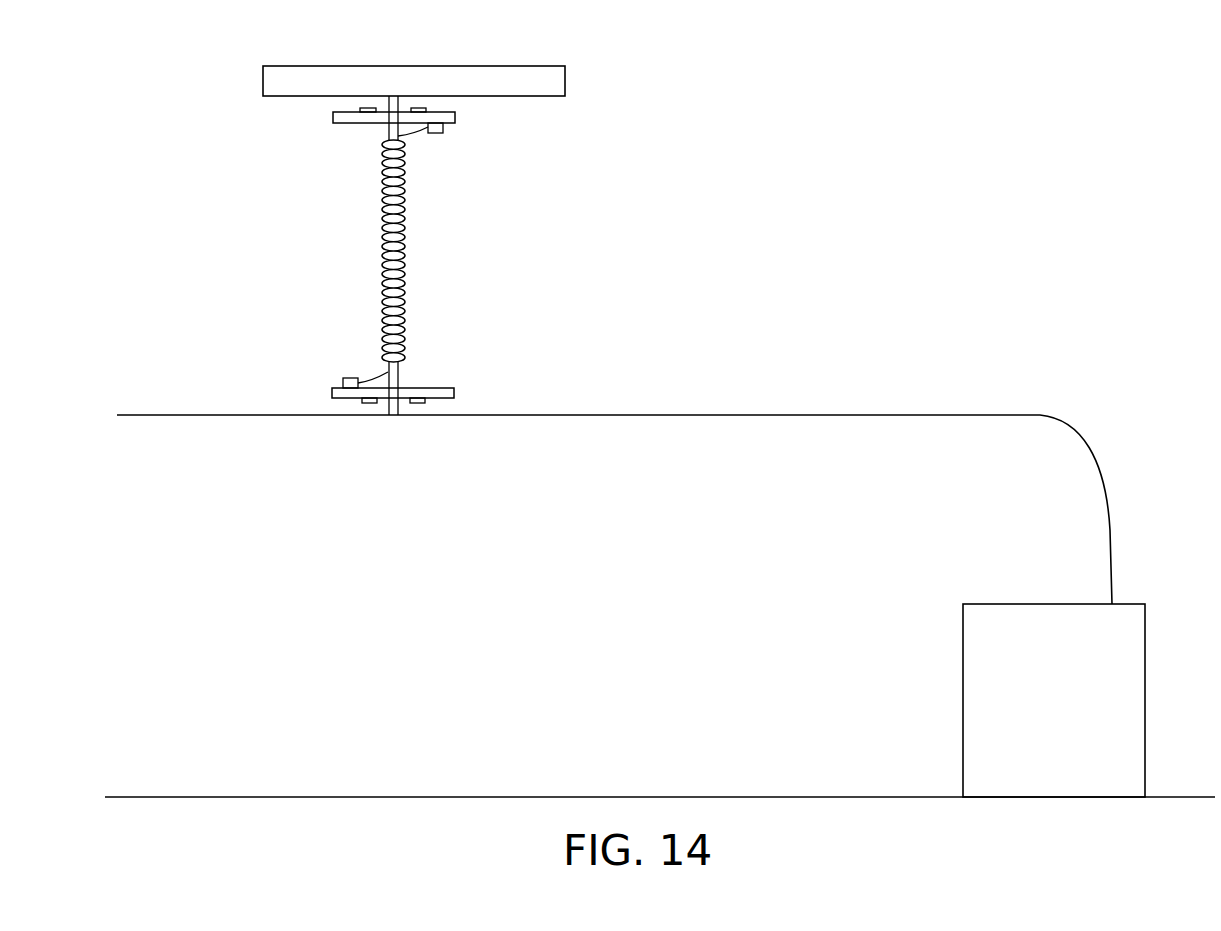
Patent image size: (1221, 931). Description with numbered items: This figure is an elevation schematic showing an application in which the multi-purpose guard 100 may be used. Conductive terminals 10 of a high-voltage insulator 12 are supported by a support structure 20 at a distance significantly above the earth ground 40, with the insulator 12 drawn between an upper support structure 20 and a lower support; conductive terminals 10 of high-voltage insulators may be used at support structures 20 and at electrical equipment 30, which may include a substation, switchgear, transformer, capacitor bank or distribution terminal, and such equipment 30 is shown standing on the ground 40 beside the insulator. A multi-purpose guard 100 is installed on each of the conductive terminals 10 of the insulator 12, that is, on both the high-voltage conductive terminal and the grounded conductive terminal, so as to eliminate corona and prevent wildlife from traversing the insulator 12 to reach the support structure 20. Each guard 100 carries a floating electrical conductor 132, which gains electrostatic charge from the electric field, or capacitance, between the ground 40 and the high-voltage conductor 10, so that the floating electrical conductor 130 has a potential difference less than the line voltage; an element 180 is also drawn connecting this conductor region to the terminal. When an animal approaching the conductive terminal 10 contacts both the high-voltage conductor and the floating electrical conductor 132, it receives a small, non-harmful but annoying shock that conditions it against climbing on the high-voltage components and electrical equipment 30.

The conductive terminal 10 is at (399, 102).
The high-voltage insulator 12 is at (403, 278).
The support structure 20 is at (565, 84).
The electrical equipment 30 is at (963, 690).
The earth ground 40 is at (697, 797).
The multi-purpose guard 100 is at (352, 124).
The floating electrical conductor 130 is at (437, 133).
The floating electrical conductor 132 is at (362, 108).
The connecting wire 180 is at (417, 133).